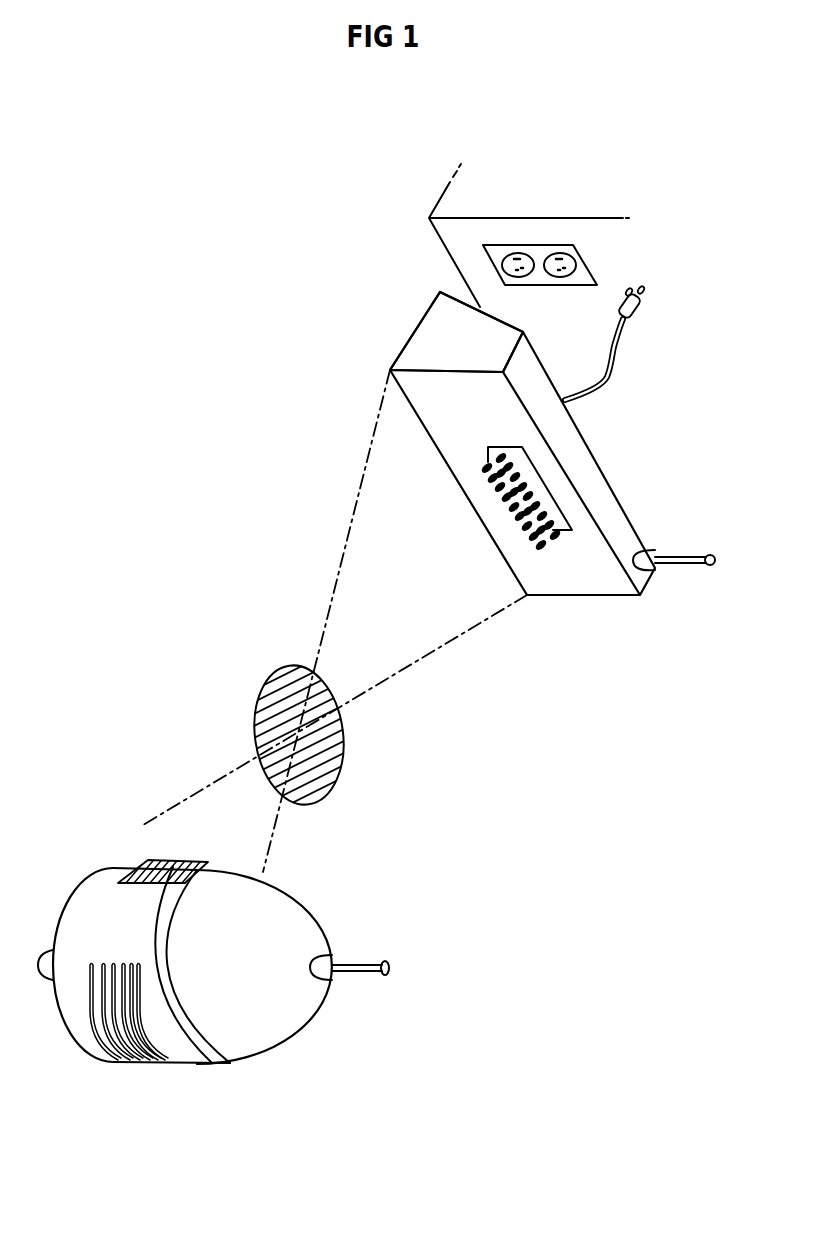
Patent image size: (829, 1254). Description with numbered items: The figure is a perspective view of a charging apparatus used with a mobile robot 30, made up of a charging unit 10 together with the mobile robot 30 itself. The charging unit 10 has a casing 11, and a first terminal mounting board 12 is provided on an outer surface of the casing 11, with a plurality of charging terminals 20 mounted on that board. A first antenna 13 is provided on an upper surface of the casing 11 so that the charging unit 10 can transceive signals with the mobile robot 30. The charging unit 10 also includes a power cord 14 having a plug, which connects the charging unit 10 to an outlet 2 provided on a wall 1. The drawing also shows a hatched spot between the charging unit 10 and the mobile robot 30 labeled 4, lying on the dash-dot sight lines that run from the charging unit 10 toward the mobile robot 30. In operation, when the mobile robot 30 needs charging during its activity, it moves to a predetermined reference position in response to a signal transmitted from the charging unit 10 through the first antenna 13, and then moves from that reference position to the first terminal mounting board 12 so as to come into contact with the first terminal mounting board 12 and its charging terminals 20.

The wall 1 is at (458, 240).
The outlet 2 is at (602, 272).
The light spot / illuminated area 4 is at (258, 702).
The charging unit 10 is at (642, 458).
The casing 11 is at (430, 341).
The first terminal mounting board 12 is at (490, 457).
The first antenna 13 is at (678, 565).
The power cord 14 is at (612, 382).
The charging terminals 20 is at (505, 448).
The mobile robot 30 is at (352, 890).